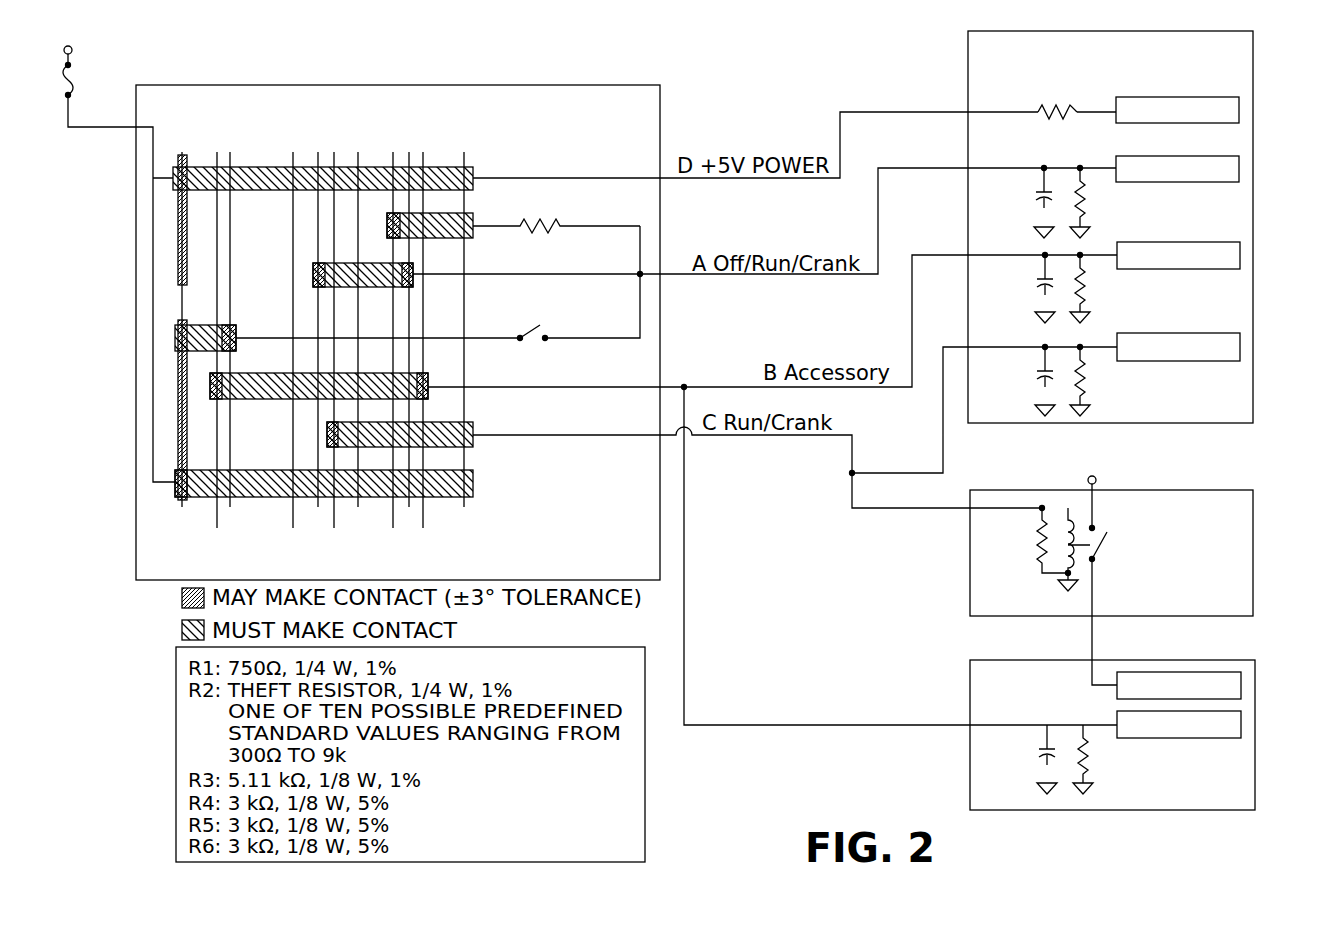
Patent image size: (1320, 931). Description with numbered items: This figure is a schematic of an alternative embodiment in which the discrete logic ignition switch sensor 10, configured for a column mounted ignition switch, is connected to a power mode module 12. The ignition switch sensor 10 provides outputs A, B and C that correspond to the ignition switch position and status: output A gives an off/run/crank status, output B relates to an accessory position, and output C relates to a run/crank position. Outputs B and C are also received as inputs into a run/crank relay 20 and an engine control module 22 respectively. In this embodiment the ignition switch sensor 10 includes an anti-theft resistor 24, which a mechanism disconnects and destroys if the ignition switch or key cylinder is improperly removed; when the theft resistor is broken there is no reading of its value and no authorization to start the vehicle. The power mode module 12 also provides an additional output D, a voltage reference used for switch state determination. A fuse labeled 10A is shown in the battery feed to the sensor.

The discrete logic ignition switch sensor 10 is at (675, 92).
The battery fuse 10A is at (119, 260).
The power mode module 12 is at (1253, 88).
The run/crank relay 20 is at (1208, 489).
The engine control module 22 is at (1217, 660).
The anti-theft resistor 24 is at (545, 235).